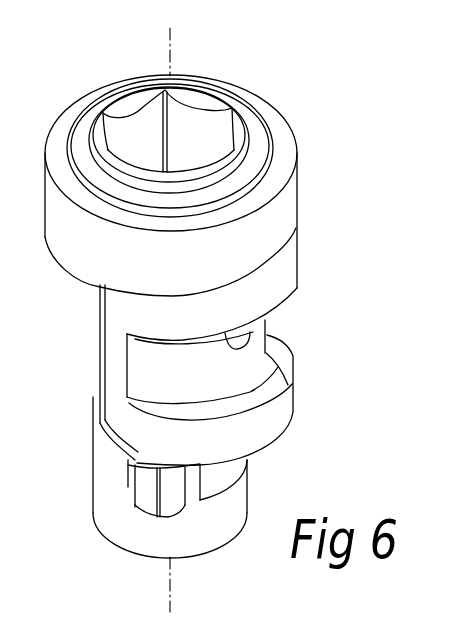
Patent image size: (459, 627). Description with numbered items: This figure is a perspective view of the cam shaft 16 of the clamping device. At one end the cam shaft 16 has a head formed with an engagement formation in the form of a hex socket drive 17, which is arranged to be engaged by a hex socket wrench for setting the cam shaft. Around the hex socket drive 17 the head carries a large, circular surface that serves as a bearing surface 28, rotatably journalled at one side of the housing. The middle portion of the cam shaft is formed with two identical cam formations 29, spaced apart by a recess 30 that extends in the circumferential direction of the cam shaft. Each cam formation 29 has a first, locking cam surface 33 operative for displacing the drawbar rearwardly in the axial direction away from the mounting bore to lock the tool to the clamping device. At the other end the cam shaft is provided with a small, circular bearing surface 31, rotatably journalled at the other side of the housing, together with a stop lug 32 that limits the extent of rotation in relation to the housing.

The cam shaft 16 is at (343, 181).
The hex socket drive 17 is at (190, 124).
The bearing surface 28 is at (62, 240).
The cam formations 29 is at (305, 263).
The recess 30 is at (148, 367).
The bearing surface 31 is at (229, 521).
The stop lug 32 is at (146, 490).
The locking cam surface 33 is at (276, 290).